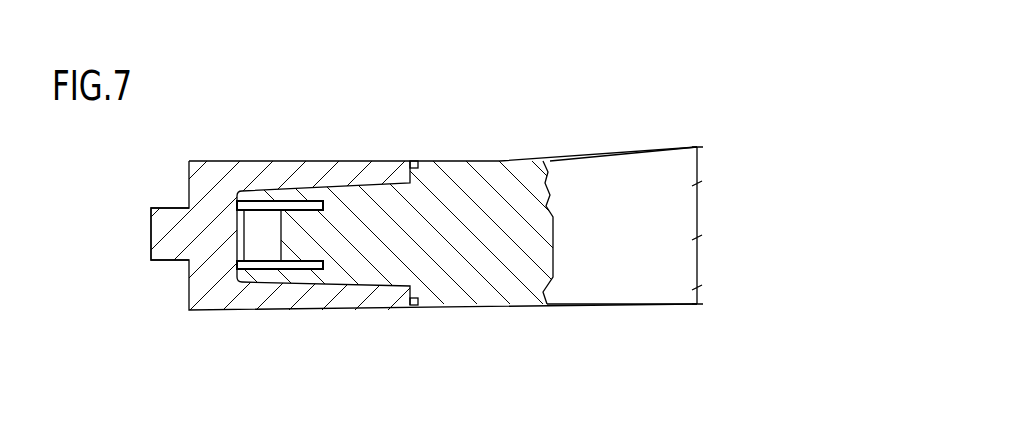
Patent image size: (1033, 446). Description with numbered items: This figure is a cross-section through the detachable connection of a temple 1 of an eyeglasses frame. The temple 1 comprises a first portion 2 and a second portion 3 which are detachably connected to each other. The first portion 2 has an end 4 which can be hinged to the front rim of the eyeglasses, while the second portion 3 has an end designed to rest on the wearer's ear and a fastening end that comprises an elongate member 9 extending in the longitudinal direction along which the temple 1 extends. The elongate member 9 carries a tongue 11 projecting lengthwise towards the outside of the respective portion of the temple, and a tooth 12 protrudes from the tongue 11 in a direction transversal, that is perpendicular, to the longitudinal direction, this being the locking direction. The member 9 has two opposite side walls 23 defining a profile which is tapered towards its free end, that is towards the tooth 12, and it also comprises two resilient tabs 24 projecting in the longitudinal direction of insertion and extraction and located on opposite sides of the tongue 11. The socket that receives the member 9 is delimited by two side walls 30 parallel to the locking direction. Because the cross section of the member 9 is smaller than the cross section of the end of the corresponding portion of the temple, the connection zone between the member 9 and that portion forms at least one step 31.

The temple 1 is at (511, 112).
The first portion 2 is at (224, 158).
The second portion 3 is at (595, 270).
The end 4 is at (157, 222).
The elongate member 9 is at (360, 234).
The tongue 11 is at (293, 238).
The tooth 12 is at (260, 228).
The side walls 23 is at (344, 184).
The resilient tabs 24 is at (271, 197).
The side walls 30 is at (313, 191).
The step 31 is at (410, 162).